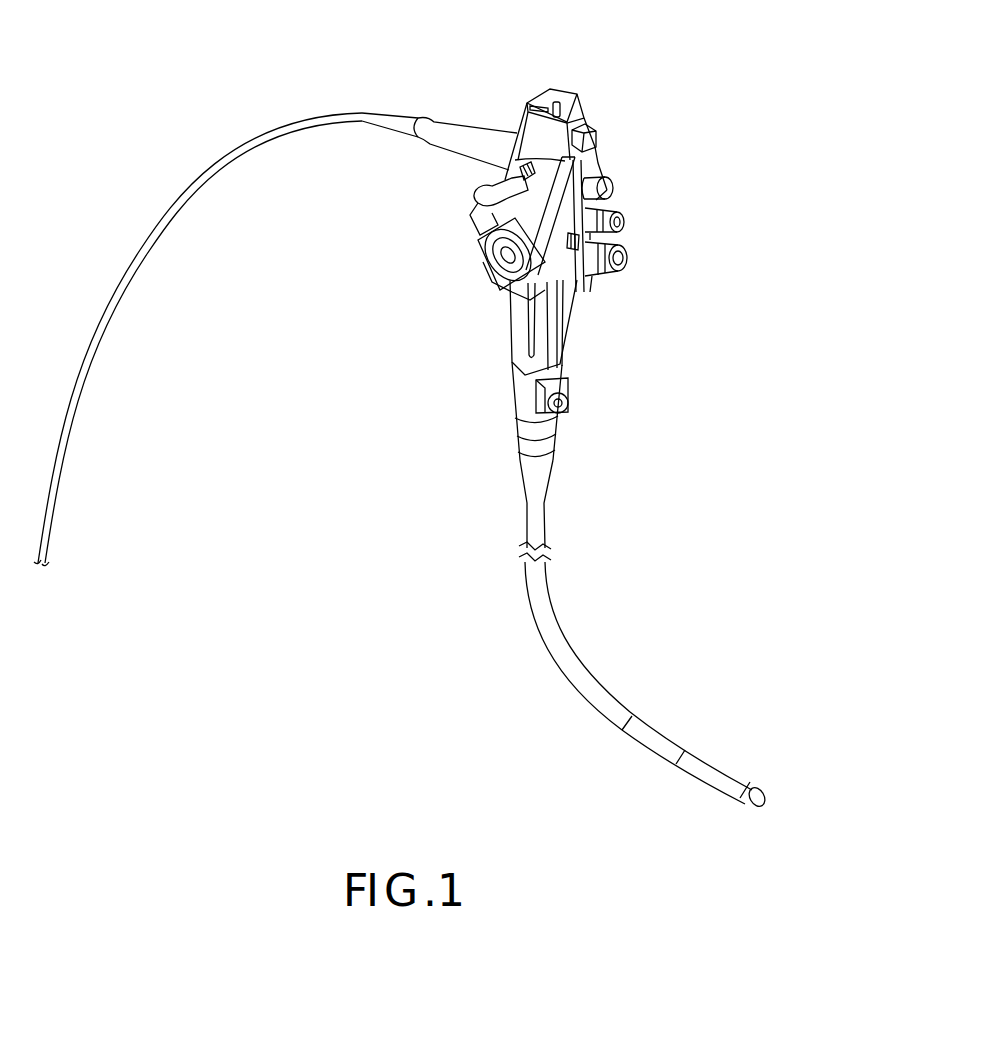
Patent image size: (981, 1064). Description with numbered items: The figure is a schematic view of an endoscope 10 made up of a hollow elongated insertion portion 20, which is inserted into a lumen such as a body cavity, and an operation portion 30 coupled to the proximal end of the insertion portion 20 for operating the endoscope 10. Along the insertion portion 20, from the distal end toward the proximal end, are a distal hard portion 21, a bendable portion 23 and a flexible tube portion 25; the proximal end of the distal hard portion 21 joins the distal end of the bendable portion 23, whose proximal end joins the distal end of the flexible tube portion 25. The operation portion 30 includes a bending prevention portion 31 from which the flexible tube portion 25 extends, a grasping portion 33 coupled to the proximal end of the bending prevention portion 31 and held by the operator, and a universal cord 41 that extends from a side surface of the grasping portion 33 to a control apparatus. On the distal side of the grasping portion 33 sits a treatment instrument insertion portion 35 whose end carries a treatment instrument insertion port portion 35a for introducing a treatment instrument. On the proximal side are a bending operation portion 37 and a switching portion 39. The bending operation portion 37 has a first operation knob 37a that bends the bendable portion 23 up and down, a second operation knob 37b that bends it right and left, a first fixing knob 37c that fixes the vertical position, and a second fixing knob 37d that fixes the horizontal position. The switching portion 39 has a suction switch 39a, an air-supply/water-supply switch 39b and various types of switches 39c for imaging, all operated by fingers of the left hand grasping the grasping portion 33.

The endoscope 10 is at (165, 92).
The insertion portion 20 is at (583, 495).
The distal hard portion 21 is at (757, 787).
The bendable portion 23 is at (655, 733).
The flexible tube portion 25 is at (545, 587).
The operation portion 30 is at (497, 320).
The bending prevention portion 31 is at (531, 481).
The grasping portion 33 is at (570, 293).
The treatment instrument insertion portion 35 is at (555, 430).
The treatment instrument insertion port portion 35a is at (568, 400).
The bending operation portion 37 is at (400, 148).
The first operation knob 37a is at (480, 203).
The second operation knob 37b is at (477, 237).
The first fixing knob 37c is at (513, 150).
The second fixing knob 37d is at (490, 273).
The switching portion 39 is at (705, 160).
The suction switch 39a is at (627, 257).
The air-supply/water-supply switch 39b is at (624, 219).
The various types of switches 39c is at (603, 142).
The universal cord 41 is at (140, 241).